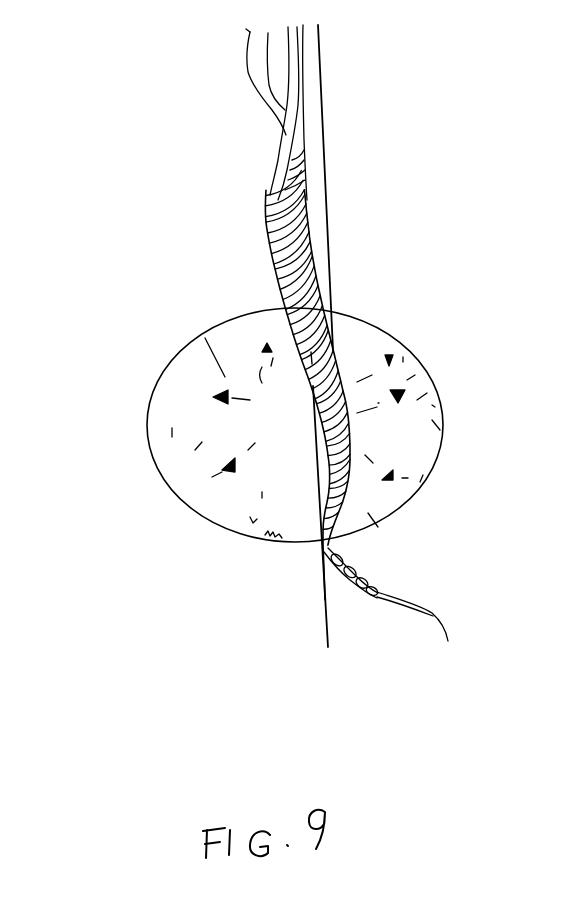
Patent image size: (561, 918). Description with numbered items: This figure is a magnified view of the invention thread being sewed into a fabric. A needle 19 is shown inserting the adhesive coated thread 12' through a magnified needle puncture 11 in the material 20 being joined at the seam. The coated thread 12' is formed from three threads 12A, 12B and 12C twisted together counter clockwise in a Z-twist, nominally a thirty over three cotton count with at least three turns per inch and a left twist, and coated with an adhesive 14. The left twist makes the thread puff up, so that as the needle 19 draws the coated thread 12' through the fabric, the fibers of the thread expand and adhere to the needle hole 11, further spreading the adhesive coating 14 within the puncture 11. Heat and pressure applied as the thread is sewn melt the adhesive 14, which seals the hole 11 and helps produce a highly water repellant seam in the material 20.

The thread 12A is at (249, 70).
The thread 12B is at (288, 100).
The thread 12C is at (269, 110).
The adhesive coated thread 12' is at (373, 395).
The needle 19 is at (330, 223).
The material 20 is at (427, 394).
The adhesive coating 14 is at (225, 478).
The needle puncture 11 is at (292, 493).